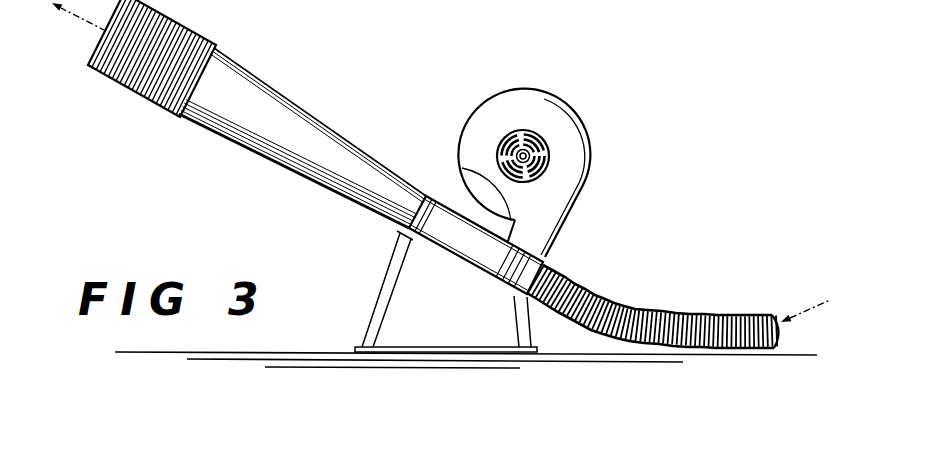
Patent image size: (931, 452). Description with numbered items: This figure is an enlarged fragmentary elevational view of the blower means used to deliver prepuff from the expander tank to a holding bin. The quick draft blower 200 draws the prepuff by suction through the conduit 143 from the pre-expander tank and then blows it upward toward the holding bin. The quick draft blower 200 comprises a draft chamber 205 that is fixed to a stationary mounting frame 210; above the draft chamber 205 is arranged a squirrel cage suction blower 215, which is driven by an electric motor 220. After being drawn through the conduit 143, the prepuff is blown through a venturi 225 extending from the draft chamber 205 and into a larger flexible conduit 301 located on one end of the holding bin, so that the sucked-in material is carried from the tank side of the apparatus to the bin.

The conduit 143 is at (627, 304).
The quick draft blower 200 is at (541, 157).
The draft chamber 205 is at (493, 286).
The stationary mounting frame 210 is at (385, 303).
The squirrel cage suction blower 215 is at (573, 141).
The electric motor 220 is at (513, 128).
The venturi 225 is at (283, 100).
The flexible conduit 301 is at (188, 28).